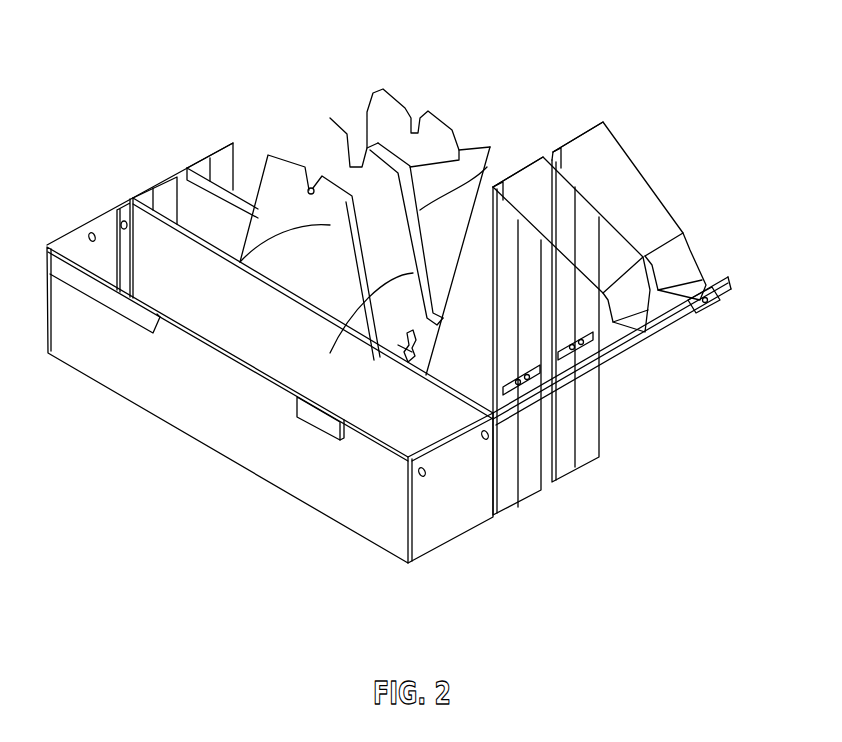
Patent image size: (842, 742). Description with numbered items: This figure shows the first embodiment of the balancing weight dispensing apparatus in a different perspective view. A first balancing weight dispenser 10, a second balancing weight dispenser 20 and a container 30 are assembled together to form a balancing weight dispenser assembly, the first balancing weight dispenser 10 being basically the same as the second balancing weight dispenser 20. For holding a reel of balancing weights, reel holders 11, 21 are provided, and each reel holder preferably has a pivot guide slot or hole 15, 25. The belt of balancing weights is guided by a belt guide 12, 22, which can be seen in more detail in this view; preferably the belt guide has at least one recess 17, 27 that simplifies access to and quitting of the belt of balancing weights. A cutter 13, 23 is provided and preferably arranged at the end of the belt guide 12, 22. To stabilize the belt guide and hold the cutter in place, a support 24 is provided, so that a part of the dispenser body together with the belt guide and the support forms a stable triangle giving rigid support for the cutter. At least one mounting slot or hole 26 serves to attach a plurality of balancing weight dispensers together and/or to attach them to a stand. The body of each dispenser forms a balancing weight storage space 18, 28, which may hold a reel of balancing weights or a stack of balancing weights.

The first balancing weight dispenser 10 is at (588, 487).
The reel holder 11 is at (467, 225).
The belt guide 12 is at (603, 133).
The cutter 13 is at (697, 313).
The pivot guide slot or hole 15 is at (371, 152).
The recess 17 is at (703, 268).
The balancing weight storage space 18 is at (227, 173).
The second balancing weight dispenser 20 is at (532, 518).
The reel holder 21 is at (372, 318).
The belt guide 22 is at (603, 210).
The cutter 23 is at (655, 322).
The support 24 is at (570, 380).
The pivot guide slot or hole 25 is at (333, 226).
The mounting slot or hole 26 is at (405, 358).
The recess 27 is at (683, 248).
The balancing weight storage space 28 is at (170, 207).
The container 30 is at (473, 553).